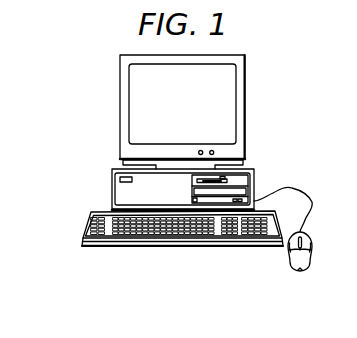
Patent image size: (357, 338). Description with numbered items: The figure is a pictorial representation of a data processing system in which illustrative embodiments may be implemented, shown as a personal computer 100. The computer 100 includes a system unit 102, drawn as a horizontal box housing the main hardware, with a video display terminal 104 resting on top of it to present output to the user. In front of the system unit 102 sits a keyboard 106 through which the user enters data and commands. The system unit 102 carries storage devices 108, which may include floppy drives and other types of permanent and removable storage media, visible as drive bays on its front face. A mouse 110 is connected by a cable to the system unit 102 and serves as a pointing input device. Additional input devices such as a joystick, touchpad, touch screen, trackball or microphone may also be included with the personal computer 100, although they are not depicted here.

The computer 100 is at (64, 97).
The system unit 102 is at (112, 188).
The video display terminal 104 is at (245, 105).
The keyboard 106 is at (103, 248).
The storage devices 108 is at (225, 180).
The mouse 110 is at (302, 272).